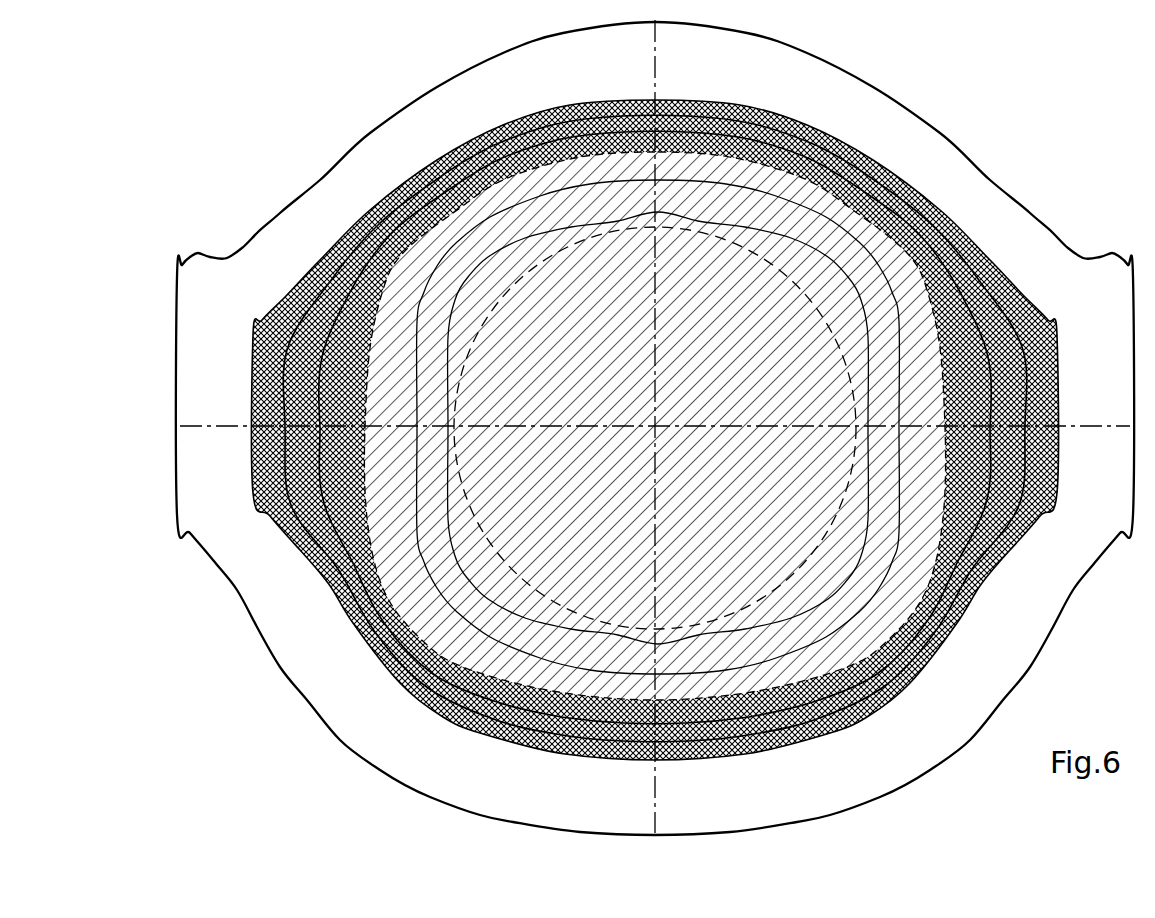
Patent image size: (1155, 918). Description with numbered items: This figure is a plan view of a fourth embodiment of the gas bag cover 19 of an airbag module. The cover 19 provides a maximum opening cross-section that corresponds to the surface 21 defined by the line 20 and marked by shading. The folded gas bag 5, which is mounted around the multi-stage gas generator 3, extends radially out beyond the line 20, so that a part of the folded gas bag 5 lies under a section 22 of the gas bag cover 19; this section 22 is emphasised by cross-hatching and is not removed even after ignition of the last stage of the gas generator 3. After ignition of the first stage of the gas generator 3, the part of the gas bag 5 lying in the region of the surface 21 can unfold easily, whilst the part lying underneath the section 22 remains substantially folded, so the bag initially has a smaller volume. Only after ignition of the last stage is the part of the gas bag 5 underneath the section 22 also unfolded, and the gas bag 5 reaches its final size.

The gas bag cover 19 is at (1038, 613).
The gas generator 3 is at (323, 588).
The section of the gas bag cover 22 is at (443, 722).
The line 20 is at (375, 635).
The surface 21 is at (380, 670).
The gas bag 5 is at (427, 703).